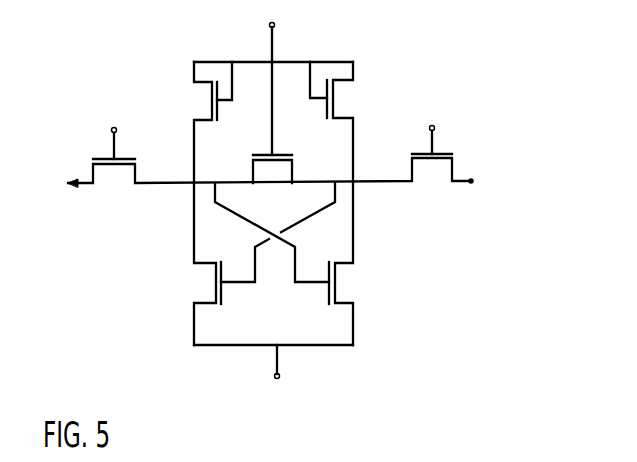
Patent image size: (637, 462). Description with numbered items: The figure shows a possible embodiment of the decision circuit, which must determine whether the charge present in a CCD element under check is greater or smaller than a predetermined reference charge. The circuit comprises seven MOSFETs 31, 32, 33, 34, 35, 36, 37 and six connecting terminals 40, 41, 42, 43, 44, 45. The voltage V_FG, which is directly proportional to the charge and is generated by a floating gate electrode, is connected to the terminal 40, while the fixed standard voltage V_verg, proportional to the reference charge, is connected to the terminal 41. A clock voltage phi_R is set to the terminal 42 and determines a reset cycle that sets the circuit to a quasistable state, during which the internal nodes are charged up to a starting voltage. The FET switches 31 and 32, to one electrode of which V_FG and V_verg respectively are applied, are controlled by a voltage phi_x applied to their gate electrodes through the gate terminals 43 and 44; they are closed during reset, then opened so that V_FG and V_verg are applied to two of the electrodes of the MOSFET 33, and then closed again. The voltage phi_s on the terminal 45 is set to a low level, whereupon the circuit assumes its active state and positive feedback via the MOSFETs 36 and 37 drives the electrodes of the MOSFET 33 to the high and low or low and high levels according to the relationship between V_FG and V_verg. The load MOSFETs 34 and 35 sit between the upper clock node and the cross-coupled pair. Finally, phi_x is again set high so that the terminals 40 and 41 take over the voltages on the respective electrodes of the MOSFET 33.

The FET switch 31 is at (117, 166).
The FET switch 32 is at (437, 161).
The MOSFET 33 is at (274, 163).
The MOSFET 34 is at (335, 95).
The MOSFET 35 is at (210, 100).
The MOSFET 36 is at (339, 280).
The MOSFET 37 is at (216, 289).
The connecting terminal 40 is at (67, 186).
The connecting terminal 41 is at (472, 183).
The connecting terminal 42 is at (271, 21).
The connecting terminal 43 is at (123, 118).
The connecting terminal 44 is at (431, 126).
The connecting terminal 45 is at (279, 378).